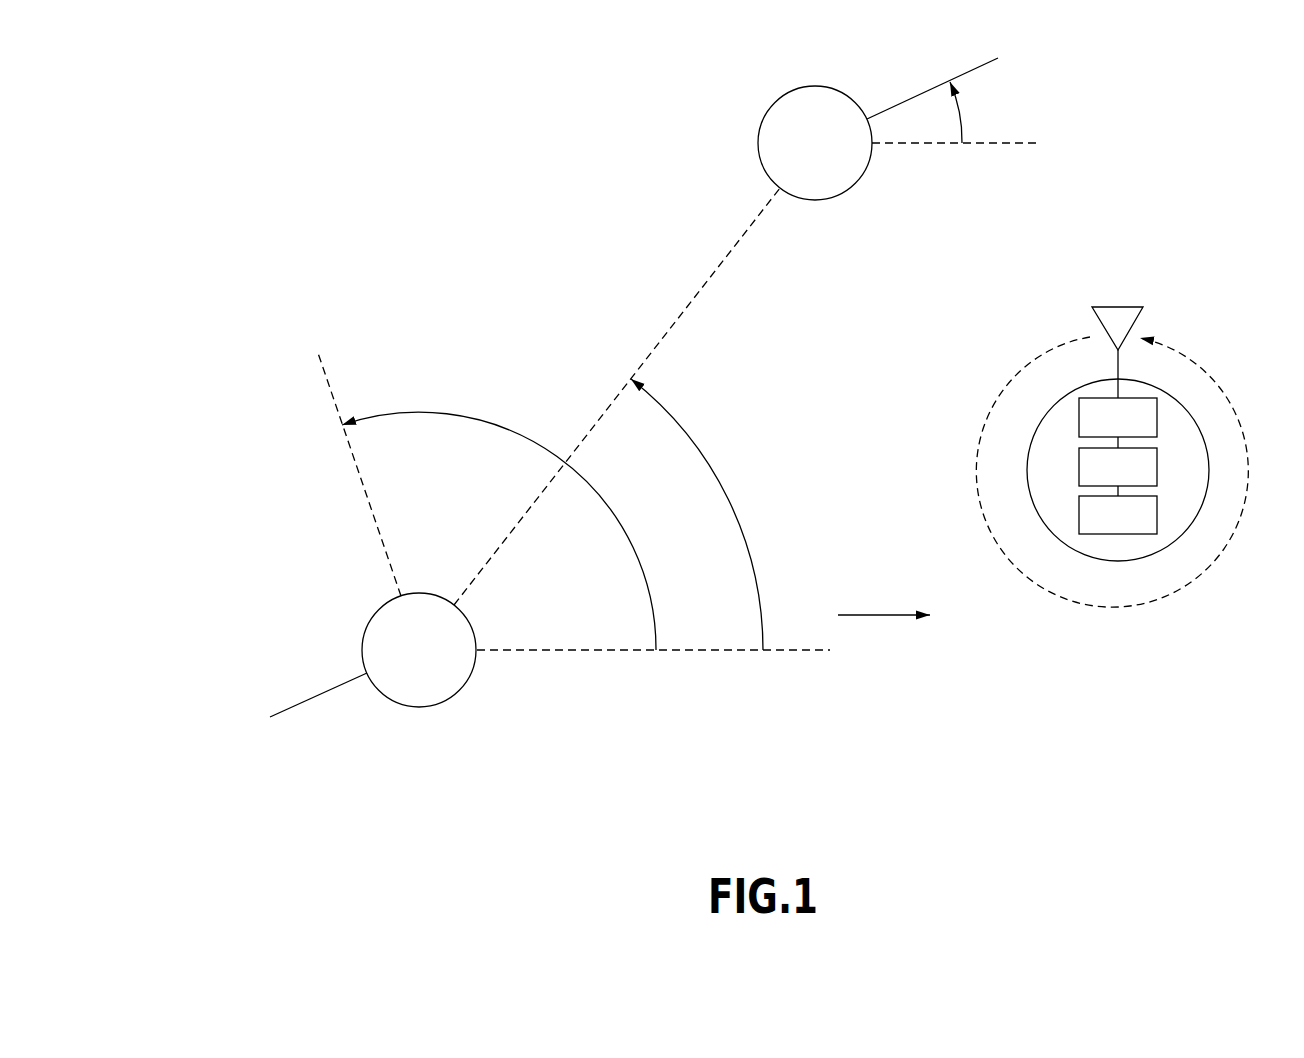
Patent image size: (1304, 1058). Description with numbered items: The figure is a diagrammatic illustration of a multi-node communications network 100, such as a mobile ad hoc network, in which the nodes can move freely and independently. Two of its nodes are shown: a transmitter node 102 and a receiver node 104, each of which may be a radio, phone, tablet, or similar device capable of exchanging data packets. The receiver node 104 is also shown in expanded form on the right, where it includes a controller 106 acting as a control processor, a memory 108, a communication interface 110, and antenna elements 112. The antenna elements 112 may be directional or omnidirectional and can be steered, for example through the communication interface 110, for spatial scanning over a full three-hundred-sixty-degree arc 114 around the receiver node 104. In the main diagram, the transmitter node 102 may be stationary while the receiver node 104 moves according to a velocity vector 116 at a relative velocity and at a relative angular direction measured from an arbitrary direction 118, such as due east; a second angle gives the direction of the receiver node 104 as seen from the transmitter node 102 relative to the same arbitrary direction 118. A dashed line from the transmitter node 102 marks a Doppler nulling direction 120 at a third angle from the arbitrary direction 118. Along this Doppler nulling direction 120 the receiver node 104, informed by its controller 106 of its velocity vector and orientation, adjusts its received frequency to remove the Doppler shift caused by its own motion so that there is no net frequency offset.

The multi-node communications network 100 is at (273, 180).
The transmitter node 102 is at (370, 620).
The receiver node 104 is at (770, 105).
The controller 106 is at (1099, 480).
The memory 108 is at (1099, 528).
The communication interface 110 is at (1099, 431).
The antenna elements 112 is at (1108, 305).
The full 360-degree arc 114 is at (1157, 600).
The velocity vector 116 is at (907, 99).
The arbitrary direction 118 is at (863, 616).
The Doppler nulling direction 120 is at (327, 380).